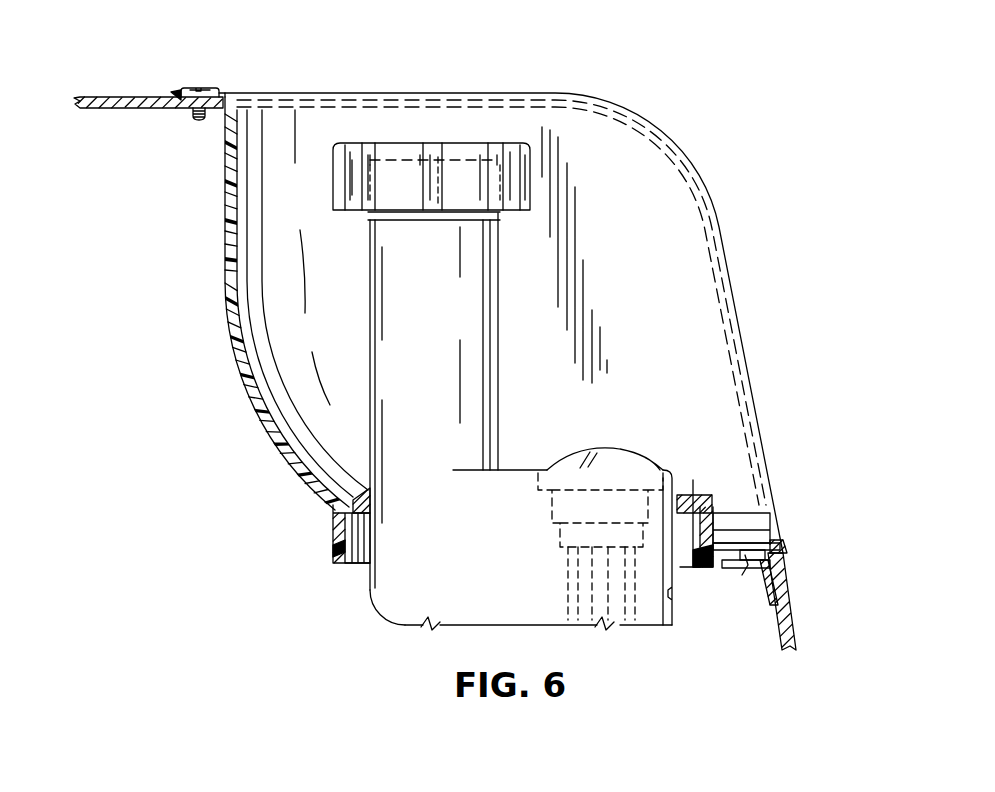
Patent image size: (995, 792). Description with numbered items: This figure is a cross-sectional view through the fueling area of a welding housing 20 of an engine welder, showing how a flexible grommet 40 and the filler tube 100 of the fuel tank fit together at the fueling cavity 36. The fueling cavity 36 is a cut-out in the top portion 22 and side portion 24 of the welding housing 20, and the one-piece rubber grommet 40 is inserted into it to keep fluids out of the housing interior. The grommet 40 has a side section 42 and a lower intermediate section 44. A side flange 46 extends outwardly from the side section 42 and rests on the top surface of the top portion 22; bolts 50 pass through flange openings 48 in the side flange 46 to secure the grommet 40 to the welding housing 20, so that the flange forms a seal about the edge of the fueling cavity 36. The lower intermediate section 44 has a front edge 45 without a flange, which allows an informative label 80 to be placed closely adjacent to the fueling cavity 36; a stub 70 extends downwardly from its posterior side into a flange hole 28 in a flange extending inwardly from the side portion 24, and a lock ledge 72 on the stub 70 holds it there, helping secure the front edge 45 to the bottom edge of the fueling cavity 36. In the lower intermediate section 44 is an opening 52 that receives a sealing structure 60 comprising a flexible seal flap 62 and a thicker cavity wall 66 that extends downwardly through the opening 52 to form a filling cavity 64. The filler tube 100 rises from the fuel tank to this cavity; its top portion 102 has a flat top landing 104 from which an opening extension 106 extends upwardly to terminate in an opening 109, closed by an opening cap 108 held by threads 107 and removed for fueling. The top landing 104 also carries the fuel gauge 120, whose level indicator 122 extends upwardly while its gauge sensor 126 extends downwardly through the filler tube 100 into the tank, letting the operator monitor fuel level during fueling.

The welding housing 20 is at (92, 88).
The top portion 22 is at (131, 97).
The side portion 24 is at (792, 635).
The flange hole 28 is at (760, 550).
The fueling cavity 36 is at (215, 101).
The grommet 40 is at (701, 159).
The side section 42 is at (228, 247).
The lower intermediate section 44 is at (738, 543).
The front edge 45 is at (787, 555).
The side flange 46 is at (173, 92).
The flange openings 48 is at (215, 101).
The bolts 50 is at (204, 88).
The opening 52 is at (357, 561).
The sealing structure 60 is at (724, 494).
The seal flap 62 is at (363, 497).
The filling cavity 64 is at (691, 566).
The cavity wall 66 is at (335, 542).
The stub 70 is at (787, 568).
The lock ledge 72 is at (740, 555).
The label 80 is at (787, 595).
The filler tube 100 is at (402, 624).
The top portion 102 is at (393, 598).
The top landing 104 is at (513, 470).
The opening extension 106 is at (487, 297).
The threads 107 is at (488, 222).
The opening cap 108 is at (517, 147).
The opening 109 is at (449, 159).
The fuel gauge 120 is at (553, 507).
The level indicator 122 is at (620, 462).
The gauge sensor 126 is at (607, 617).